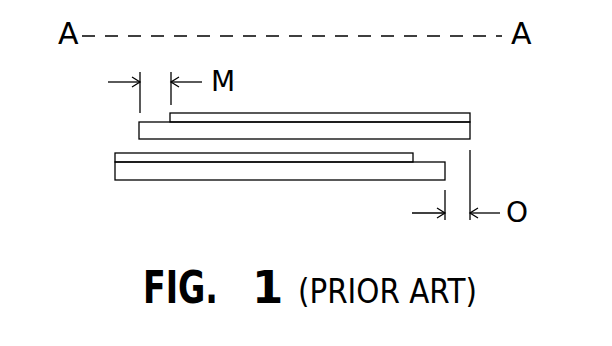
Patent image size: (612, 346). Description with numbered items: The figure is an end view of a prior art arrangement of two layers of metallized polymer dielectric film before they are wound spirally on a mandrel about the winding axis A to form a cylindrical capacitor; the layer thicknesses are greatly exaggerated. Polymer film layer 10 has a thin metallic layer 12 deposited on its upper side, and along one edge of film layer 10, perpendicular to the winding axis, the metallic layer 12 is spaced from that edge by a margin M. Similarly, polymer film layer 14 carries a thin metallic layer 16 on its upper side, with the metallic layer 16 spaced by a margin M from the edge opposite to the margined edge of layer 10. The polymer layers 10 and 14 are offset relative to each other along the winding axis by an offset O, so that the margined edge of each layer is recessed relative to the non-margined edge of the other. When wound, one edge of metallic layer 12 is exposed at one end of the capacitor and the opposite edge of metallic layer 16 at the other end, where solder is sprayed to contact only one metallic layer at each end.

The polymer film layer 10 is at (470, 133).
The metallic layer 12 is at (373, 113).
The polymer film layer 14 is at (115, 166).
The metallic layer 16 is at (116, 153).